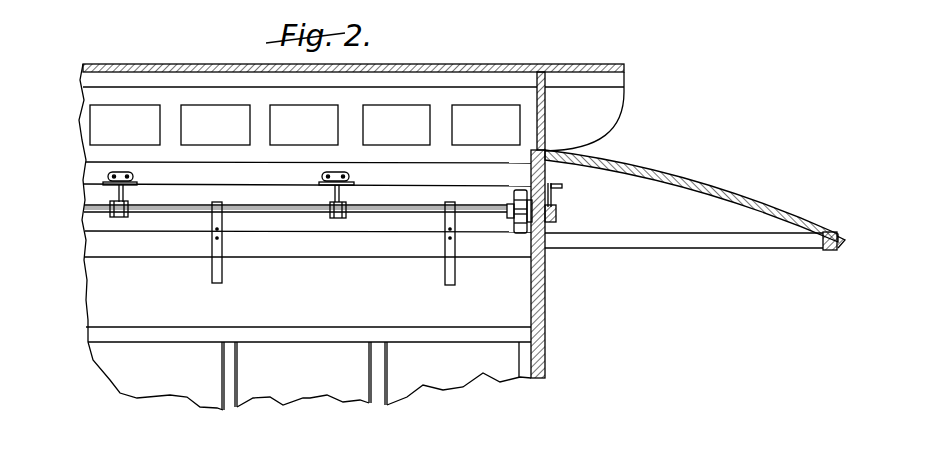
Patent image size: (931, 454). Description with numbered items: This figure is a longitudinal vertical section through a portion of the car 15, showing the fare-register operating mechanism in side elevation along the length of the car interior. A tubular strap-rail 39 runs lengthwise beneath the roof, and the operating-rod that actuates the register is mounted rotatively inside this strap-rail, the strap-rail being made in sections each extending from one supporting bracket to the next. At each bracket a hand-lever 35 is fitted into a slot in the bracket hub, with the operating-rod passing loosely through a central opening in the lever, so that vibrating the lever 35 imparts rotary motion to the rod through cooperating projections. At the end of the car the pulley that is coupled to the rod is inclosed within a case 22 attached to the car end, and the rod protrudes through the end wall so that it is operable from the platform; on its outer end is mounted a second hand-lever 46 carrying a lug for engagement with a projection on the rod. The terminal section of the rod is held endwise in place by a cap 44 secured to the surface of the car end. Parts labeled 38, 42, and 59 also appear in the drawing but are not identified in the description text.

The car 15 is at (546, 273).
The case 22 is at (512, 203).
The hand-lever 35 is at (124, 191).
The bracket 38 is at (137, 184).
The strap-rail 39 is at (413, 206).
The hanger bar 42 is at (222, 276).
The caps 44 is at (558, 216).
The hand-lever 46 is at (554, 199).
The shaft 59 is at (238, 205).